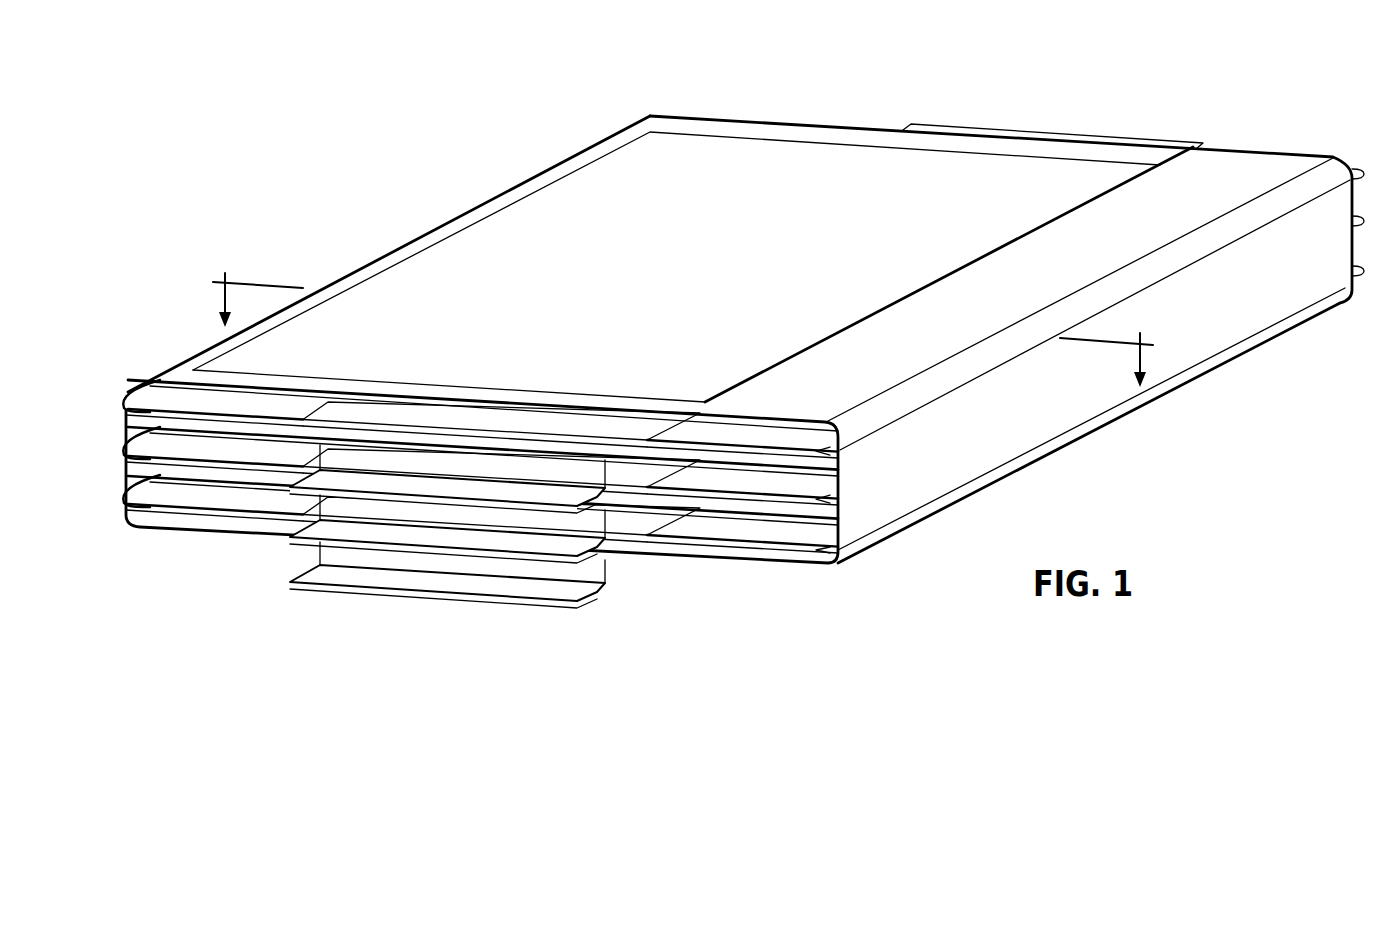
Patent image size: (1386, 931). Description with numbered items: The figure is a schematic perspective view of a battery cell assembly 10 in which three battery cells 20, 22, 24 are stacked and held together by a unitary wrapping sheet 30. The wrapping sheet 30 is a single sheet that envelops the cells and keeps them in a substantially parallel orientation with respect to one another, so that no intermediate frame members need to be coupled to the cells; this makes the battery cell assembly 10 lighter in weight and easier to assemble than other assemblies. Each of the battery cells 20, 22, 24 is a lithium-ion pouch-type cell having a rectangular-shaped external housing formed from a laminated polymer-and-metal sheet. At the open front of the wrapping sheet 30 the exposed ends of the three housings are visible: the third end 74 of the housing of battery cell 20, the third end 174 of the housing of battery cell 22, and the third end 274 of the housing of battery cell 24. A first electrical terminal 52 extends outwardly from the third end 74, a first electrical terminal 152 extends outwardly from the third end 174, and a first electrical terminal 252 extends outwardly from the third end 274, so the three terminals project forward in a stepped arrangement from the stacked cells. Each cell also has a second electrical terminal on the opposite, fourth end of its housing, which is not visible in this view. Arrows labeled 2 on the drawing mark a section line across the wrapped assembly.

The battery cell assembly 10 is at (955, 97).
The unitary wrapping sheet 30 is at (1192, 200).
The section line 2- 2 is at (683, 314).
The battery cell 20 is at (160, 513).
The battery cell 22 is at (207, 467).
The battery cell 24 is at (247, 423).
The first electrical terminal 52 is at (380, 580).
The first electrical terminal 152 is at (467, 540).
The first electrical terminal 252 is at (553, 497).
The third end 74 is at (700, 547).
The third end 174 is at (750, 500).
The third end 274 is at (797, 457).